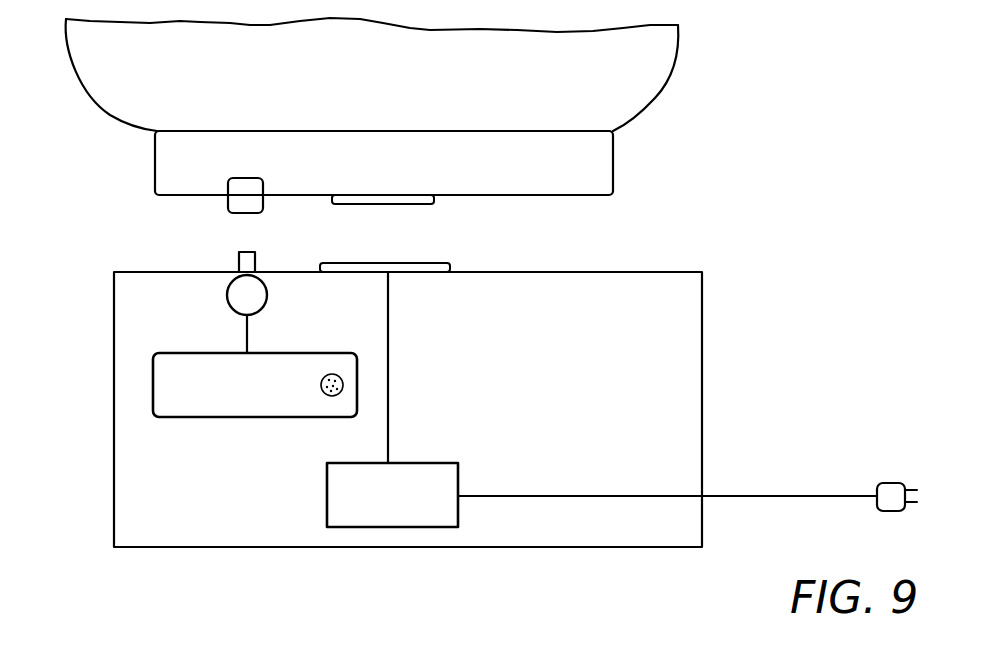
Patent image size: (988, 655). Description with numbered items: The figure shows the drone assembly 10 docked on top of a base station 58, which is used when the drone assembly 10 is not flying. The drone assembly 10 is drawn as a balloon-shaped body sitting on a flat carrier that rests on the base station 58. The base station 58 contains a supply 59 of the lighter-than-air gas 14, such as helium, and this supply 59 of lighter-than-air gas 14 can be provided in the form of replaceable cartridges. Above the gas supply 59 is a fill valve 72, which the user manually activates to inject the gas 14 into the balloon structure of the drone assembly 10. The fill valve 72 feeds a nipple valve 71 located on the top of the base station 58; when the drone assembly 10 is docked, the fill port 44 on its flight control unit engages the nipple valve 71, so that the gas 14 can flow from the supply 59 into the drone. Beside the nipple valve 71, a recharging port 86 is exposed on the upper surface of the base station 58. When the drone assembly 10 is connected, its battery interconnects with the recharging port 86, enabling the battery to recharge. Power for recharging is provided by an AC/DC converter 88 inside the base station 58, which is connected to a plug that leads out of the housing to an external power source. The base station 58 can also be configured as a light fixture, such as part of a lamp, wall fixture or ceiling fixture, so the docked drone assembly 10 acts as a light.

The drone assembly 10 is at (113, 112).
The fill port 44 is at (246, 213).
The recharging port 86 is at (398, 263).
The base station 58 is at (674, 270).
The nipple valve 71 is at (238, 265).
The fill valve 72 is at (228, 304).
The gas supply 59 is at (217, 420).
The lighter-than-air gas 14 is at (335, 374).
The AC/DC converter 88 is at (325, 505).